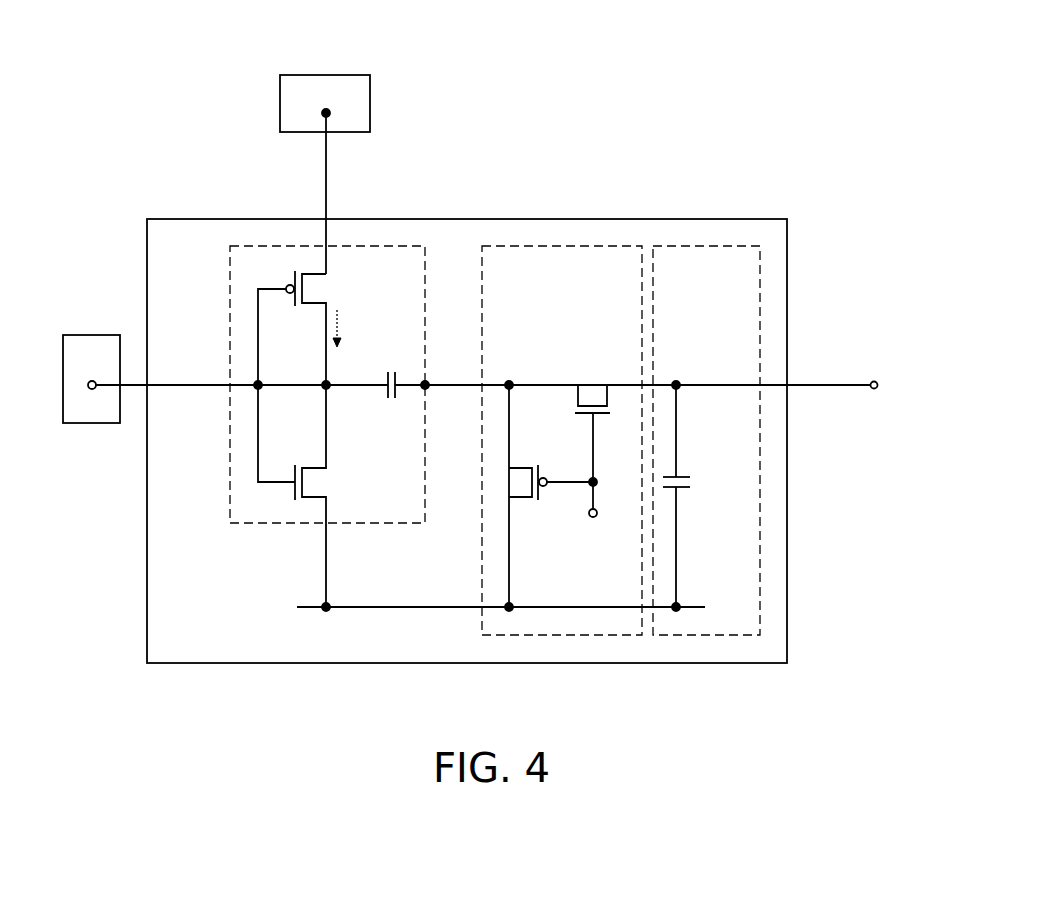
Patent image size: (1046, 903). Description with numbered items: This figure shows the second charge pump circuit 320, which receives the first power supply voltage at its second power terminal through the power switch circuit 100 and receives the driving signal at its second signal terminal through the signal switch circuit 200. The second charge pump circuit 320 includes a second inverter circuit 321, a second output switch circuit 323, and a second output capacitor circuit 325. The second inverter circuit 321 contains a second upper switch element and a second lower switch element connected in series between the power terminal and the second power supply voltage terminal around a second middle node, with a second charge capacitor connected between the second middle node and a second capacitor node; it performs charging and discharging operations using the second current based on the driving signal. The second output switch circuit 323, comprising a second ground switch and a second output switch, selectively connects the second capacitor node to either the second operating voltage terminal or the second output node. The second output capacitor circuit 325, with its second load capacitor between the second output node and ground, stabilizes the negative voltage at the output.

The power switch circuit 100 is at (326, 75).
The signal switch circuit 200 is at (91, 335).
The second charge pump circuit 320 is at (467, 219).
The second inverter circuit 321 is at (258, 523).
The second output switch circuit 323 is at (570, 635).
The second output capacitor circuit 325 is at (705, 635).